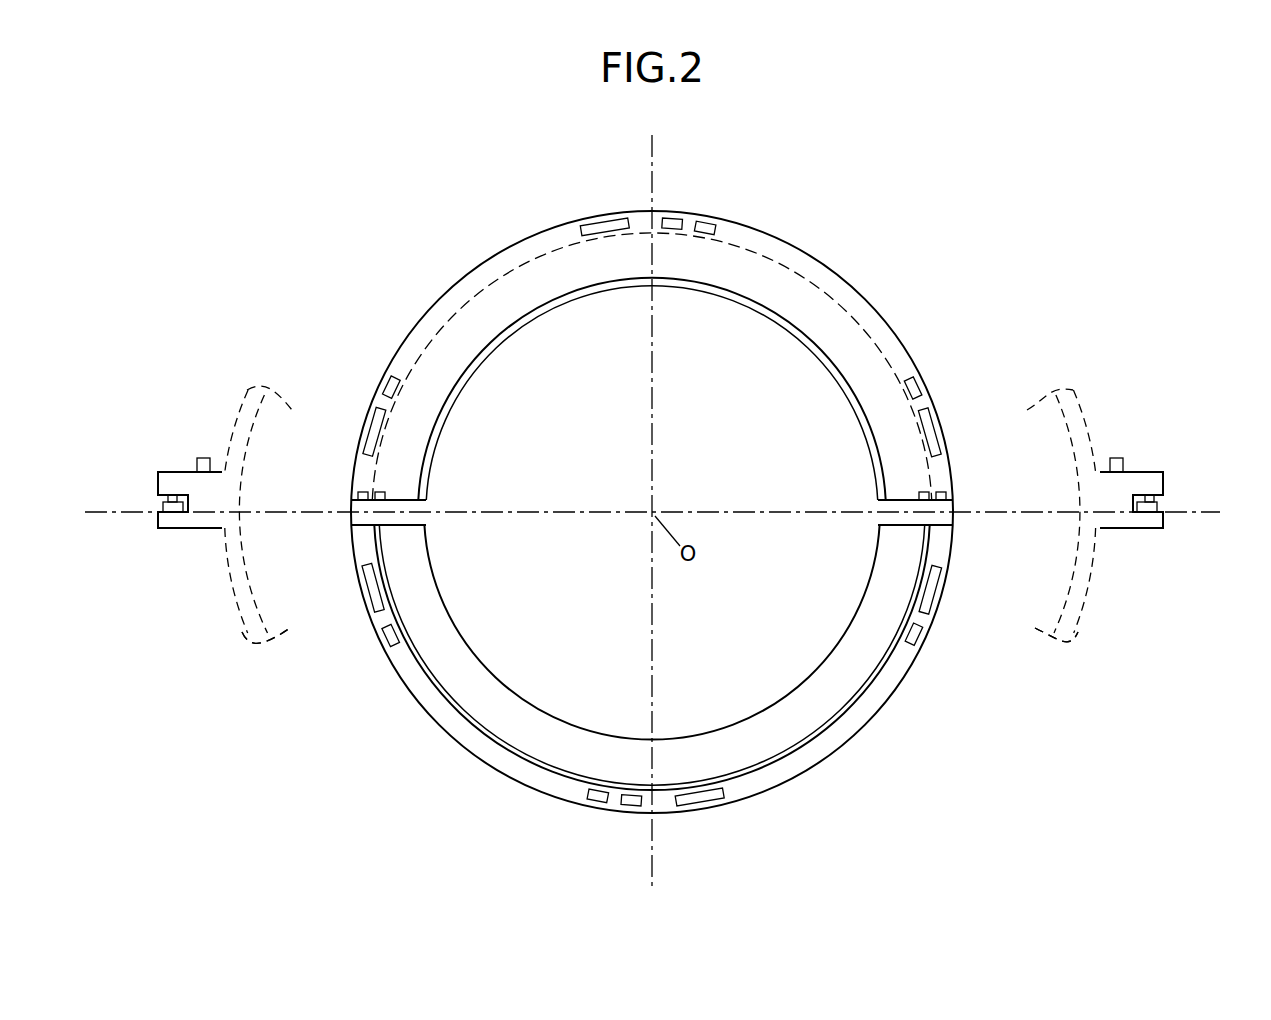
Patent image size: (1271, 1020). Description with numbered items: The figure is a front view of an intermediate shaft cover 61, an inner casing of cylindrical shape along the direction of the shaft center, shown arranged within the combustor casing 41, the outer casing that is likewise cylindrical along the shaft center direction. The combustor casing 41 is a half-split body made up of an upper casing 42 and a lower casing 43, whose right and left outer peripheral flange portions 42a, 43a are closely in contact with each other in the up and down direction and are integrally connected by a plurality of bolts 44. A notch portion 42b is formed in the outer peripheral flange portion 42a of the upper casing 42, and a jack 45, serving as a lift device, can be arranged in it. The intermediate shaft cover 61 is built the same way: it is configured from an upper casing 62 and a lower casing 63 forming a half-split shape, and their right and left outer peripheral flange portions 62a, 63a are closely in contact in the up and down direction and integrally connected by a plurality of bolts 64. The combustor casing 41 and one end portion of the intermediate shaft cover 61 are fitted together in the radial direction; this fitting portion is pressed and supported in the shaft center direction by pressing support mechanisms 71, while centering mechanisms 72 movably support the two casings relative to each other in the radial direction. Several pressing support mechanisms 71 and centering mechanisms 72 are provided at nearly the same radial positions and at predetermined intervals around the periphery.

The combustor casing 41 is at (783, 268).
The upper casing 42 is at (242, 410).
The outer peripheral flange portion 42a is at (170, 472).
The notch portion 42b is at (158, 500).
The lower casing 43 is at (242, 632).
The outer peripheral flange portion 43a is at (175, 528).
The bolts 44 is at (204, 458).
The jack 45 is at (168, 505).
The intermediate shaft cover 61 is at (836, 276).
The upper casing 62 is at (527, 241).
The outer peripheral flange portion 62a is at (362, 500).
The lower casing 63 is at (792, 772).
The outer peripheral flange portion 63a is at (370, 527).
The bolts 64 is at (362, 492).
The pressing support mechanism 71 is at (673, 218).
The centering mechanism 72 is at (603, 222).